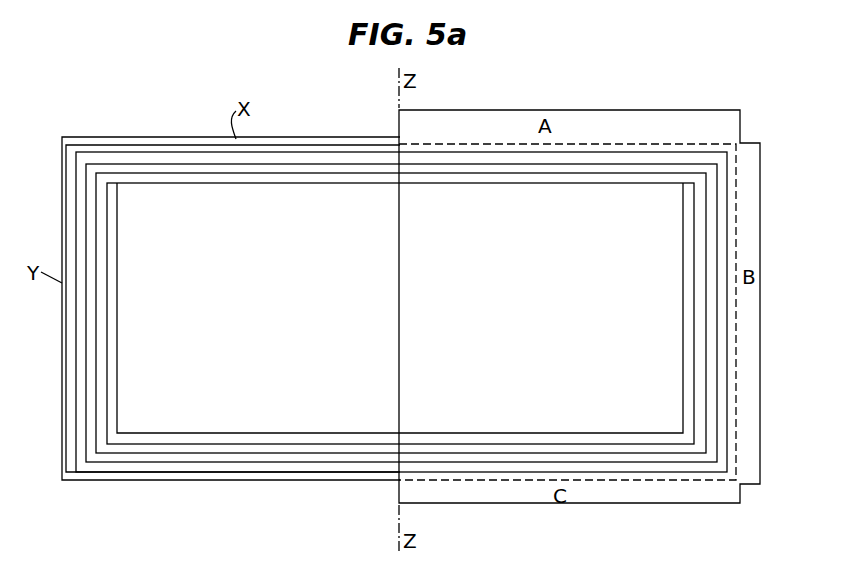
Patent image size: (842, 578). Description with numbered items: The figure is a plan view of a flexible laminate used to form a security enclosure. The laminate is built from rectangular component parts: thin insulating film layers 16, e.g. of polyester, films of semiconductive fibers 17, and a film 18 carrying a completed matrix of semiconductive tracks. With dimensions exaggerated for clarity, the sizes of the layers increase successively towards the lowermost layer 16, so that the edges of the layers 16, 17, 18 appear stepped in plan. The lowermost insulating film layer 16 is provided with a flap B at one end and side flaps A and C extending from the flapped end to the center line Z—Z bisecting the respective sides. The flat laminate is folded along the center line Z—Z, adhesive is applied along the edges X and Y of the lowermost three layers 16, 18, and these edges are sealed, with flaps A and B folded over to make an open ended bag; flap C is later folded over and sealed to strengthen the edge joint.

The insulating film layers 16 is at (183, 433).
The semiconductive fiber film layers 17 is at (253, 444).
The semiconductive track matrix film layer 18 is at (298, 472).